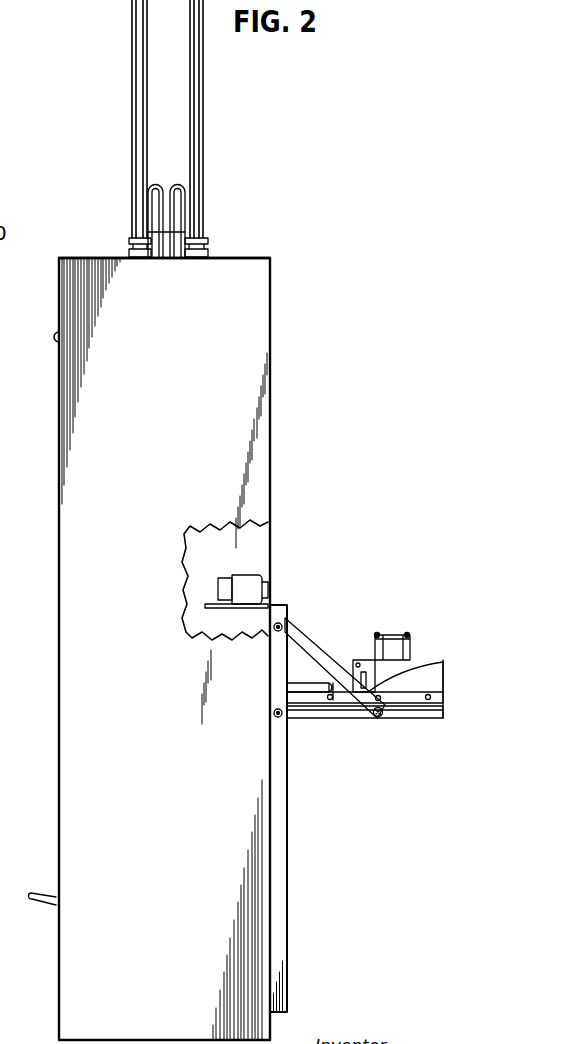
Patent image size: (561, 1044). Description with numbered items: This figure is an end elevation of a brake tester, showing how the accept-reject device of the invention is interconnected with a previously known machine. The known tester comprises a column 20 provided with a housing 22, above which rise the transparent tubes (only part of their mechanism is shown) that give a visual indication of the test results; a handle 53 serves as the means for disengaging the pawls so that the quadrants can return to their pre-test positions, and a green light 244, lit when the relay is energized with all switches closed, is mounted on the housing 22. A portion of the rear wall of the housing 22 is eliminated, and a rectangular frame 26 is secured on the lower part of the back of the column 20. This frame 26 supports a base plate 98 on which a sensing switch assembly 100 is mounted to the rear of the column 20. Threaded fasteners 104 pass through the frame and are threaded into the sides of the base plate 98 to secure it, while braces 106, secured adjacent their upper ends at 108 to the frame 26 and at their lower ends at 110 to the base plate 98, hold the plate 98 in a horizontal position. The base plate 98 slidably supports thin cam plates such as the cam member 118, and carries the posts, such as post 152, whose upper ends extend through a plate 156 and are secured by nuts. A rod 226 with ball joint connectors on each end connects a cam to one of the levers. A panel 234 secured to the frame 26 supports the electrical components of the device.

The column 20 is at (277, 280).
The housing 22 is at (250, 374).
The rectangular frame 26 is at (280, 798).
The handle 53 is at (31, 898).
The base plate 98 is at (432, 722).
The sensing switch assembly 100 is at (440, 583).
The threaded fasteners 104 is at (274, 715).
The braces 106 is at (333, 647).
The upper brace securing point 108 is at (281, 626).
The lower brace securing point 110 is at (380, 722).
The cam member 118 is at (443, 665).
The post 152 is at (448, 662).
The plate 156 is at (407, 632).
The rod 226 is at (305, 689).
The panel 234 is at (262, 610).
The green light 244 is at (57, 338).